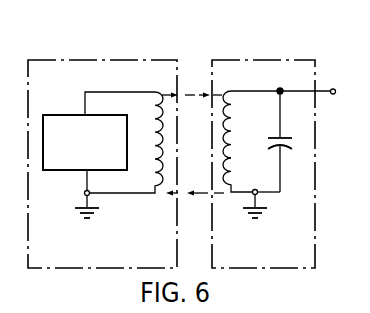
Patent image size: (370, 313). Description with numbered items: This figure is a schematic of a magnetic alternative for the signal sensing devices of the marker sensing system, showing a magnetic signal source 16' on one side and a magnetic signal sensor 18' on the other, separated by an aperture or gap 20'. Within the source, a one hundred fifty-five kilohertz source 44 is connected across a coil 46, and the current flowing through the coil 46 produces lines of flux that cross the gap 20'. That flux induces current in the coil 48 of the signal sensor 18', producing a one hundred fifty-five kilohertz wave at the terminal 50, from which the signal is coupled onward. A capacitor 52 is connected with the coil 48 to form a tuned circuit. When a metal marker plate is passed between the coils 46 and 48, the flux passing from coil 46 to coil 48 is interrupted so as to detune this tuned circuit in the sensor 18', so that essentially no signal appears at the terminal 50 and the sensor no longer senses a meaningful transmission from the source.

The magnetic signal source 16' is at (102, 150).
The magnetic signal sensor 18' is at (263, 149).
The aperture or gap 20' is at (193, 116).
The 155 kilohertz source 44 is at (67, 114).
The coil 46 is at (154, 119).
The coil 48 is at (237, 126).
The terminal 50 is at (329, 91).
The capacitor 52 is at (268, 142).